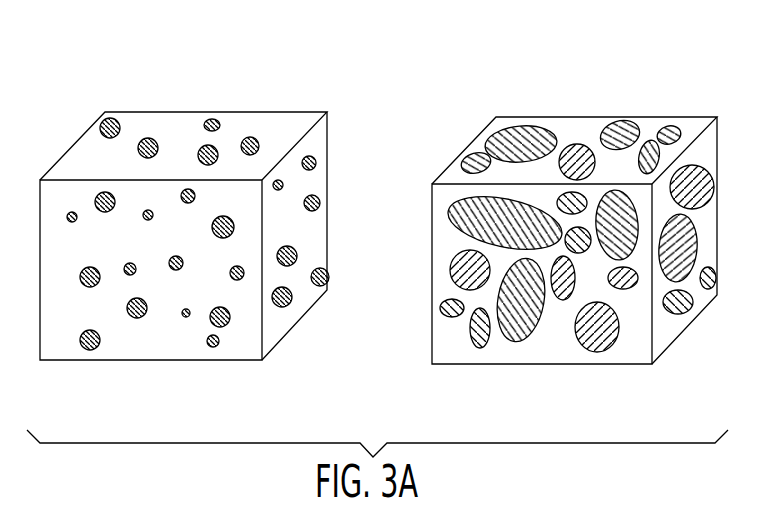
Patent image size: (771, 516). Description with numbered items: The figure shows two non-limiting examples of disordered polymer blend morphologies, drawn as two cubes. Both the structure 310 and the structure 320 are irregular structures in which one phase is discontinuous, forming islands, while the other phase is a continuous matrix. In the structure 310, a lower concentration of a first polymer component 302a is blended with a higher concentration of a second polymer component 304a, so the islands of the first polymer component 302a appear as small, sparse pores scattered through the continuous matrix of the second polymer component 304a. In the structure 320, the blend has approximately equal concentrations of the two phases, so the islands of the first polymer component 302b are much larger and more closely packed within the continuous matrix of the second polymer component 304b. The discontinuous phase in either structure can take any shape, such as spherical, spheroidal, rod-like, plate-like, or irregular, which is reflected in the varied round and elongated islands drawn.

The structure 310 is at (193, 92).
The structure 320 is at (583, 100).
The first polymer component 302a is at (92, 338).
The second polymer component 304a is at (160, 340).
The first polymer component 302b is at (480, 333).
The second polymer component 304b is at (553, 335).